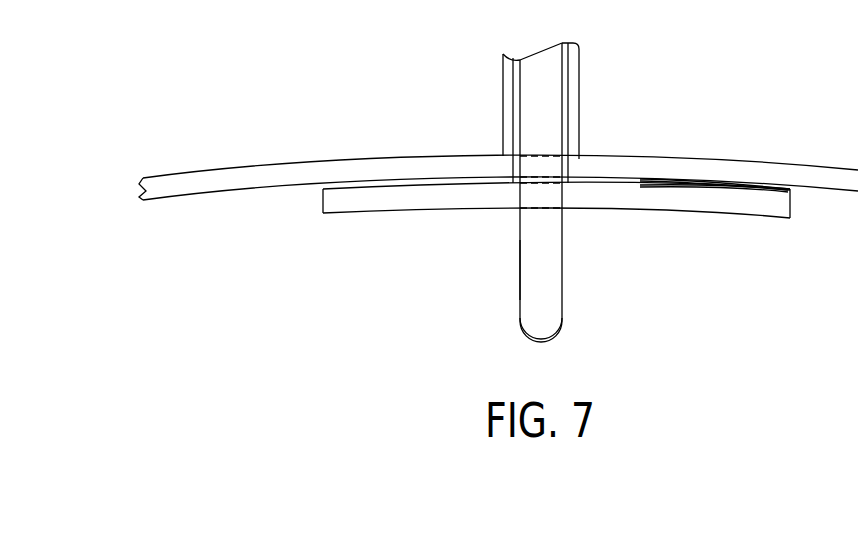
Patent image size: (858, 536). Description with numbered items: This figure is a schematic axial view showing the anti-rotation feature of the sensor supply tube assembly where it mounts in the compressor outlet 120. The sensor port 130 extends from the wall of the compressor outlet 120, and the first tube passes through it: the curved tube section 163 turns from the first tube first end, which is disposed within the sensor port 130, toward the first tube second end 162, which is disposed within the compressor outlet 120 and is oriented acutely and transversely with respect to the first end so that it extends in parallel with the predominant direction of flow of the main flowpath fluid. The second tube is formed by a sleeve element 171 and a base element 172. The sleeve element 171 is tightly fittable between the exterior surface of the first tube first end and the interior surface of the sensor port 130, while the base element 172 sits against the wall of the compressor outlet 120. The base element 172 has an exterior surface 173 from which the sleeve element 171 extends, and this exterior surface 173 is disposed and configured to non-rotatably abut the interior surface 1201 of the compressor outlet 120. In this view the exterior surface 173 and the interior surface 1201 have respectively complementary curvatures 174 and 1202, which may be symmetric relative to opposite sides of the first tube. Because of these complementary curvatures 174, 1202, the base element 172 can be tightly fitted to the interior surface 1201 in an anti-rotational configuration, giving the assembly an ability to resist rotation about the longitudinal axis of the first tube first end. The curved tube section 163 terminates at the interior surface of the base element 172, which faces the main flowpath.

The compressor outlet 120 is at (242, 178).
The sensor port 130 is at (502, 87).
The sleeve element 171 is at (568, 100).
The base element 172 is at (323, 214).
The exterior surface 173 is at (687, 185).
The curvature 174 is at (714, 189).
The interior surface 1201 is at (700, 180).
The curvature 1202 is at (715, 185).
The first tube second end 162 is at (533, 318).
The curved tube section 163 is at (533, 257).